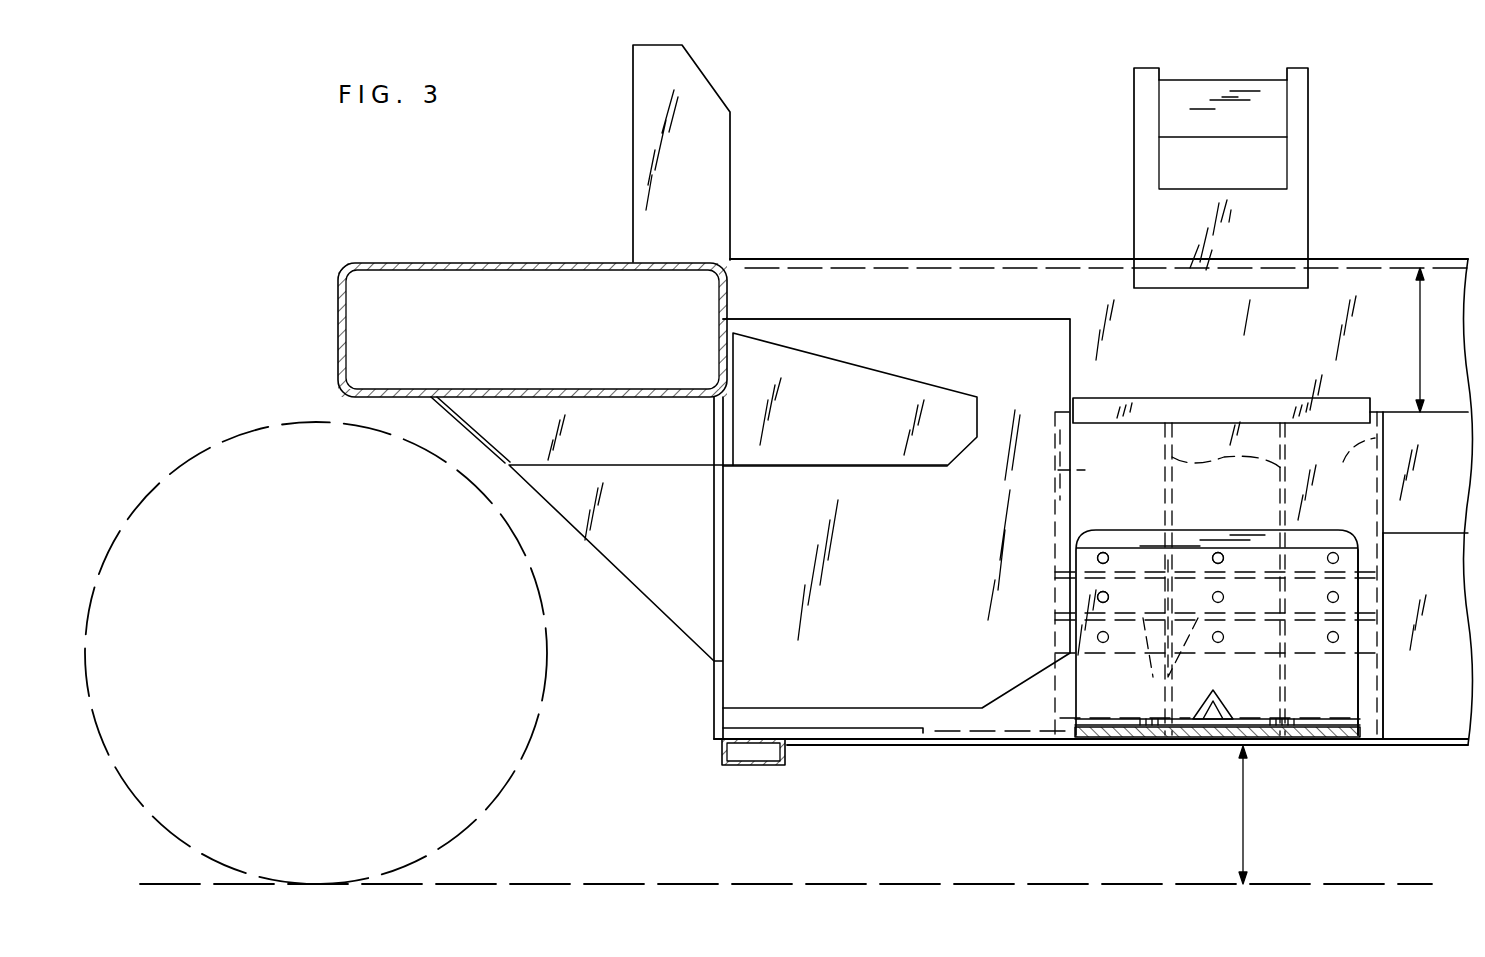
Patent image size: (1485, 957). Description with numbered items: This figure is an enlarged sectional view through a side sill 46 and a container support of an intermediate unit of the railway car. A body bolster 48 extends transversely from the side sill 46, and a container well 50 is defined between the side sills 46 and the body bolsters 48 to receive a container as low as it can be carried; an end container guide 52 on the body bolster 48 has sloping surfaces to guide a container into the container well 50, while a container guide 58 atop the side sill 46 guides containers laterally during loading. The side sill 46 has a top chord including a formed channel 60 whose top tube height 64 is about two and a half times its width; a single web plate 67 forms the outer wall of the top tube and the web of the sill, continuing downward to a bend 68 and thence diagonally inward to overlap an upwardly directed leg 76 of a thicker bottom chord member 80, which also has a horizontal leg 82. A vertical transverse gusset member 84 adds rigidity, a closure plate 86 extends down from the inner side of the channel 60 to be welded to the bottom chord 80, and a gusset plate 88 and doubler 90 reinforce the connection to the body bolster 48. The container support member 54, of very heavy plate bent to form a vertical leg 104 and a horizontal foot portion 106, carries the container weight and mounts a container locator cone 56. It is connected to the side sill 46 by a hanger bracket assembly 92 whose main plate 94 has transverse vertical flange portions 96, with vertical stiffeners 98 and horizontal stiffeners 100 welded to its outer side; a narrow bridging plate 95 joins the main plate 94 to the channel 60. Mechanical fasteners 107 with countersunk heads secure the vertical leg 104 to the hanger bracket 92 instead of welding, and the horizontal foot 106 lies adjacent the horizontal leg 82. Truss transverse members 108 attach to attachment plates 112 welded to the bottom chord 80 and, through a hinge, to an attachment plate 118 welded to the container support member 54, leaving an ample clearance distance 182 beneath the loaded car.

The side sill 46 is at (1450, 258).
The body bolster 48 is at (492, 263).
The container well 50 is at (982, 323).
The end container guide 52 is at (701, 69).
The container support member 54 is at (1353, 678).
The container locator cone 56 is at (1217, 708).
The container guide 58 is at (1227, 80).
The formed channel 60 is at (1383, 275).
The top tube height 64 is at (1422, 332).
The web plate 67 is at (1454, 428).
The bend 68 is at (1406, 533).
The upwardly directed leg 76 is at (1452, 712).
The bottom chord member 80 is at (1440, 730).
The horizontal leg 82 is at (1390, 746).
The vertical transverse gusset member 84 is at (724, 613).
The closure plate 86 is at (920, 590).
The gusset plate 88 is at (661, 528).
The doubler 90 is at (845, 424).
The hanger bracket assembly 92 is at (1261, 434).
The main plate 94 is at (1240, 501).
The bridging plate 95 is at (1197, 403).
The transverse vertical flange portion 96 is at (1216, 465).
The vertical stiffener 98 is at (1238, 460).
The horizontal stiffener 100 is at (1169, 631).
The vertical leg 104 is at (1347, 586).
The horizontal foot portion 106 is at (1345, 723).
The mechanical fastener 107 is at (1213, 558).
The transverse member 108 is at (785, 756).
The attachment plate 112 is at (824, 728).
The attachment plate 118 is at (1128, 738).
The clearance distance 182 is at (1244, 818).